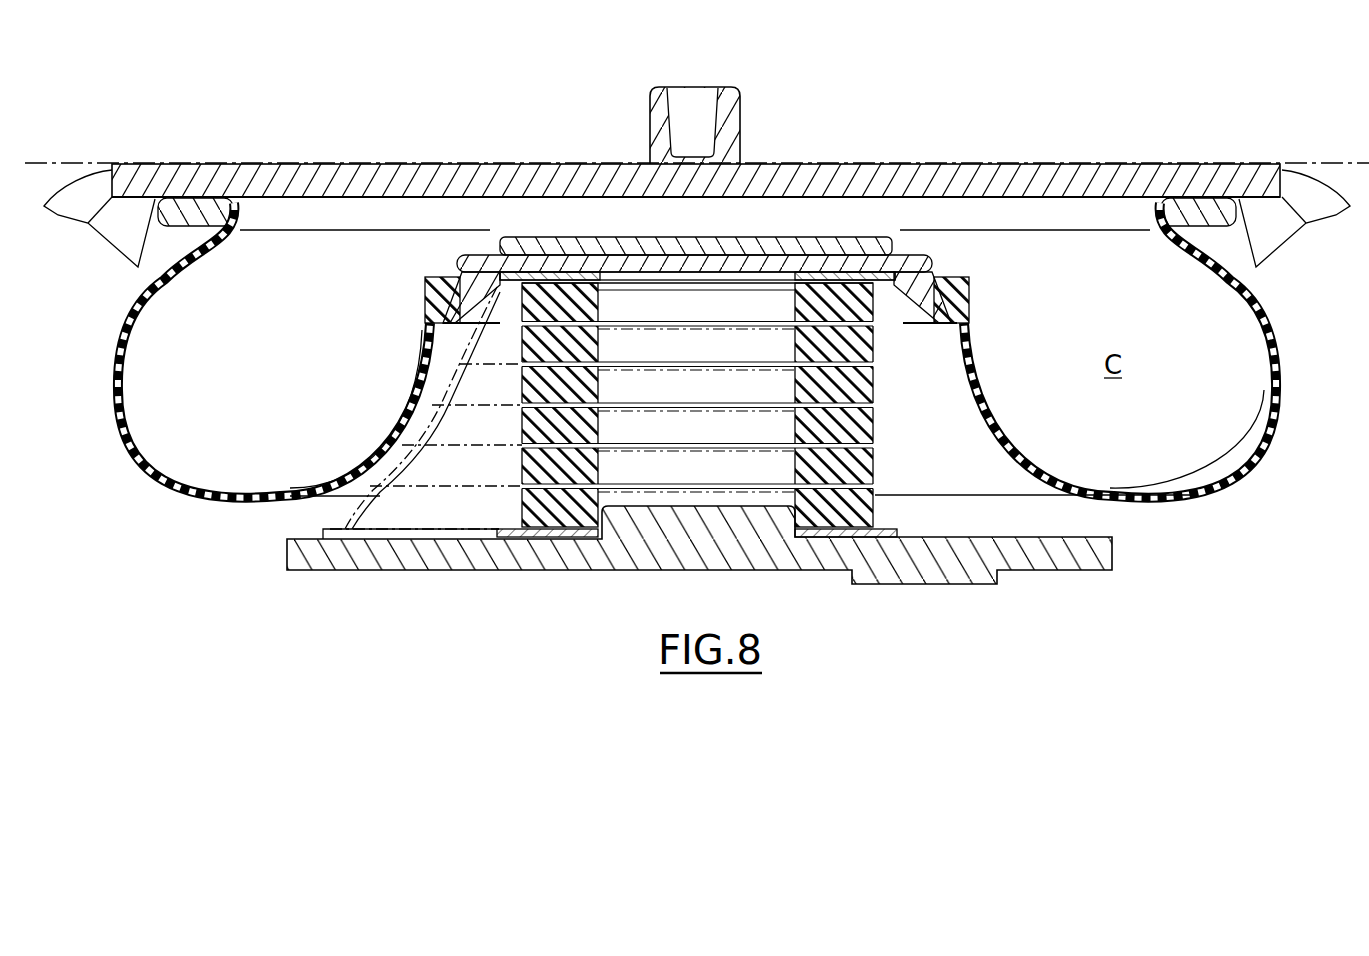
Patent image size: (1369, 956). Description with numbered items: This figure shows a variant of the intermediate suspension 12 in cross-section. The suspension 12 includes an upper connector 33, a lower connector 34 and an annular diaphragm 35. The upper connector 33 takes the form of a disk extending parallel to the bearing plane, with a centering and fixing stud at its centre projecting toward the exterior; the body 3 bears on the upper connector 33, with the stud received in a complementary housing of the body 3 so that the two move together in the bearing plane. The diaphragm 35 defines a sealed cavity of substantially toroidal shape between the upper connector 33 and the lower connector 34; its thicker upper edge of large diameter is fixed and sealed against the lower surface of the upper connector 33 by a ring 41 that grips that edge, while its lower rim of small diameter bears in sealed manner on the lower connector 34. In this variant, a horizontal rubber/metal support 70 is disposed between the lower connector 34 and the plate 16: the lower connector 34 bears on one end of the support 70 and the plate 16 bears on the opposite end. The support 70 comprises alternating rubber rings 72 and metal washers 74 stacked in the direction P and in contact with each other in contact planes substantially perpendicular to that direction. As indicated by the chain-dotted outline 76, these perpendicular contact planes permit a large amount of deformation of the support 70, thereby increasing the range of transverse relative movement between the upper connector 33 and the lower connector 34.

The body 3 is at (48, 160).
The intermediate suspension 12 is at (985, 155).
The plate 16 is at (1093, 552).
The upper connector 33 is at (365, 186).
The lower connector 34 is at (555, 265).
The annular diaphragm 35 is at (145, 420).
The ring 41 is at (1220, 206).
The horizontal rubber/metal support 70 is at (632, 405).
The rubber rings 72 is at (800, 500).
The metal washers 74 is at (875, 302).
The chain-dotted outline 76 is at (322, 513).